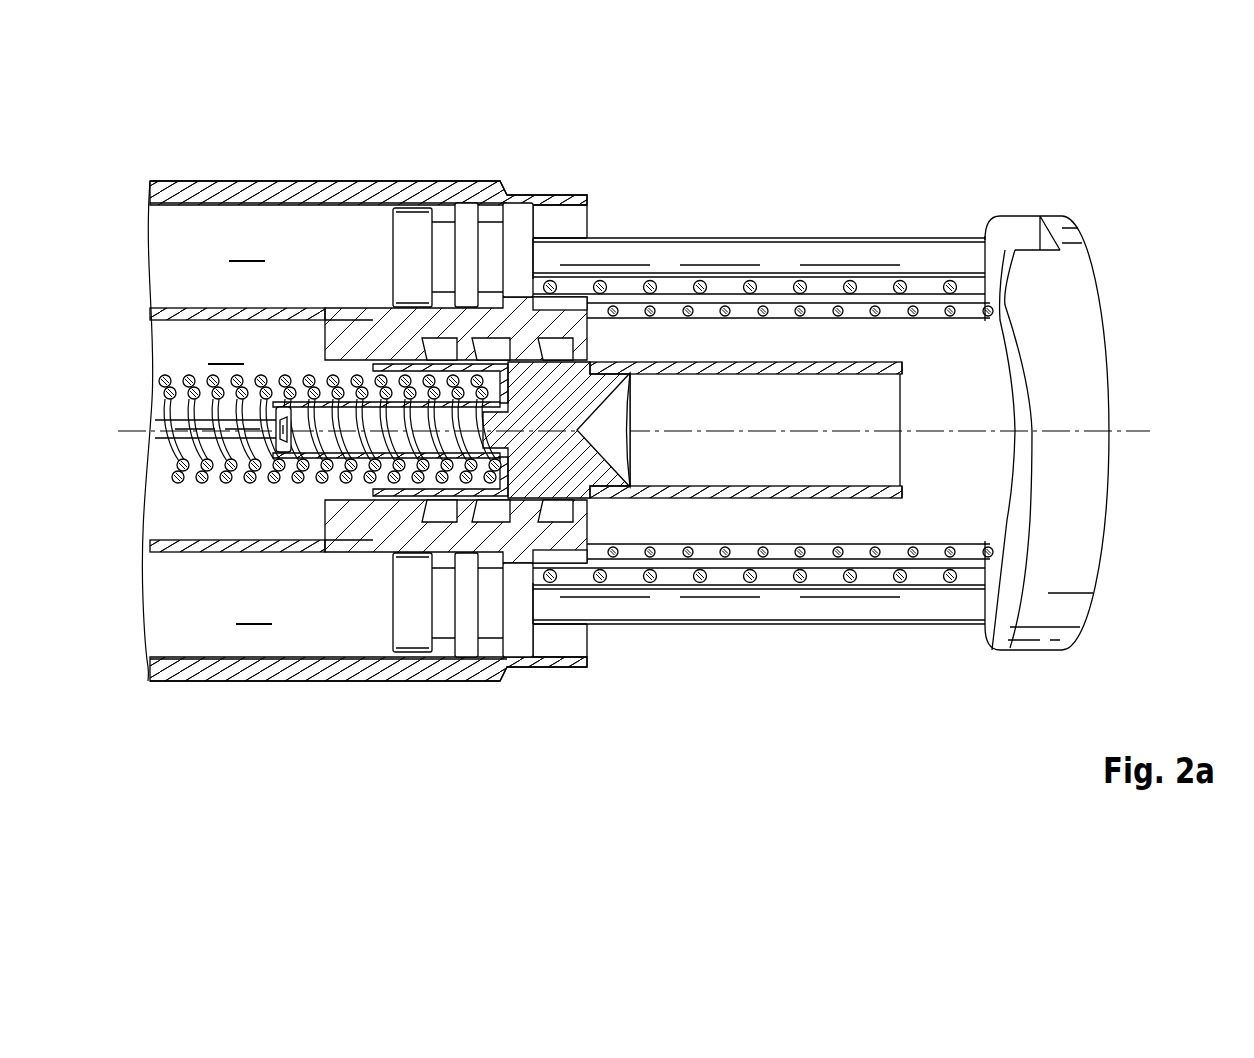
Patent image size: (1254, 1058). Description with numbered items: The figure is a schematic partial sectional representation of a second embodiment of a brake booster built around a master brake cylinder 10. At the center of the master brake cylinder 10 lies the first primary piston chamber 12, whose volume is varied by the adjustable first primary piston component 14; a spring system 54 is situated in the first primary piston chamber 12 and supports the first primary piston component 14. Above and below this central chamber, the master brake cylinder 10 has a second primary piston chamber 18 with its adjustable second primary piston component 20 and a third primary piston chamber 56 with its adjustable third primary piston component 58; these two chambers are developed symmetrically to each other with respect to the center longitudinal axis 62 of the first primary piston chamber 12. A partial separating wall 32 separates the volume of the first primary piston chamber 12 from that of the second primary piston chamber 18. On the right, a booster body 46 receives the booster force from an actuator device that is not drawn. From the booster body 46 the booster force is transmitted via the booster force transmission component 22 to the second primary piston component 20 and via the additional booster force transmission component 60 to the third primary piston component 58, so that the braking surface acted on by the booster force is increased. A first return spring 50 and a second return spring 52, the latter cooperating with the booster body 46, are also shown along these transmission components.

The master brake cylinder 10 is at (112, 150).
The first primary piston chamber 12 is at (237, 430).
The first primary piston component 14 is at (593, 383).
The second primary piston chamber 18 is at (270, 605).
The second primary piston component 20 is at (412, 630).
The booster force transmission component 22 is at (755, 604).
The partial separating wall 32 is at (193, 547).
The booster body 46 is at (1080, 300).
The first return spring 50 is at (838, 558).
The second return spring 52 is at (800, 584).
The spring system 54 is at (196, 488).
The third primary piston chamber 56 is at (270, 255).
The third primary piston component 58 is at (452, 190).
The additional booster force transmission component 60 is at (712, 252).
The center longitudinal axis 62 is at (1140, 428).